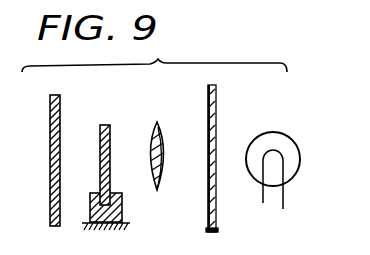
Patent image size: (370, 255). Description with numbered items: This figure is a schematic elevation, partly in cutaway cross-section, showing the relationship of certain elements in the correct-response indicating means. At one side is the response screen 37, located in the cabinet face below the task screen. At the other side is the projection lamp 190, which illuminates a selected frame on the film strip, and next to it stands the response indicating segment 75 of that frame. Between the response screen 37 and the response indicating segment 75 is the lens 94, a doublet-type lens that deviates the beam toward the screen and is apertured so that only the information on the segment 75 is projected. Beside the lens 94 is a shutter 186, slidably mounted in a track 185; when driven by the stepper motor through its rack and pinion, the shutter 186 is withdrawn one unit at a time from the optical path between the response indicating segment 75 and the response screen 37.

The response screen 37 is at (61, 96).
The shutter 186 is at (127, 115).
The track 185 is at (122, 216).
The lens 94 is at (157, 122).
The response indicating segment 75 is at (216, 100).
The projection lamp 190 is at (273, 132).